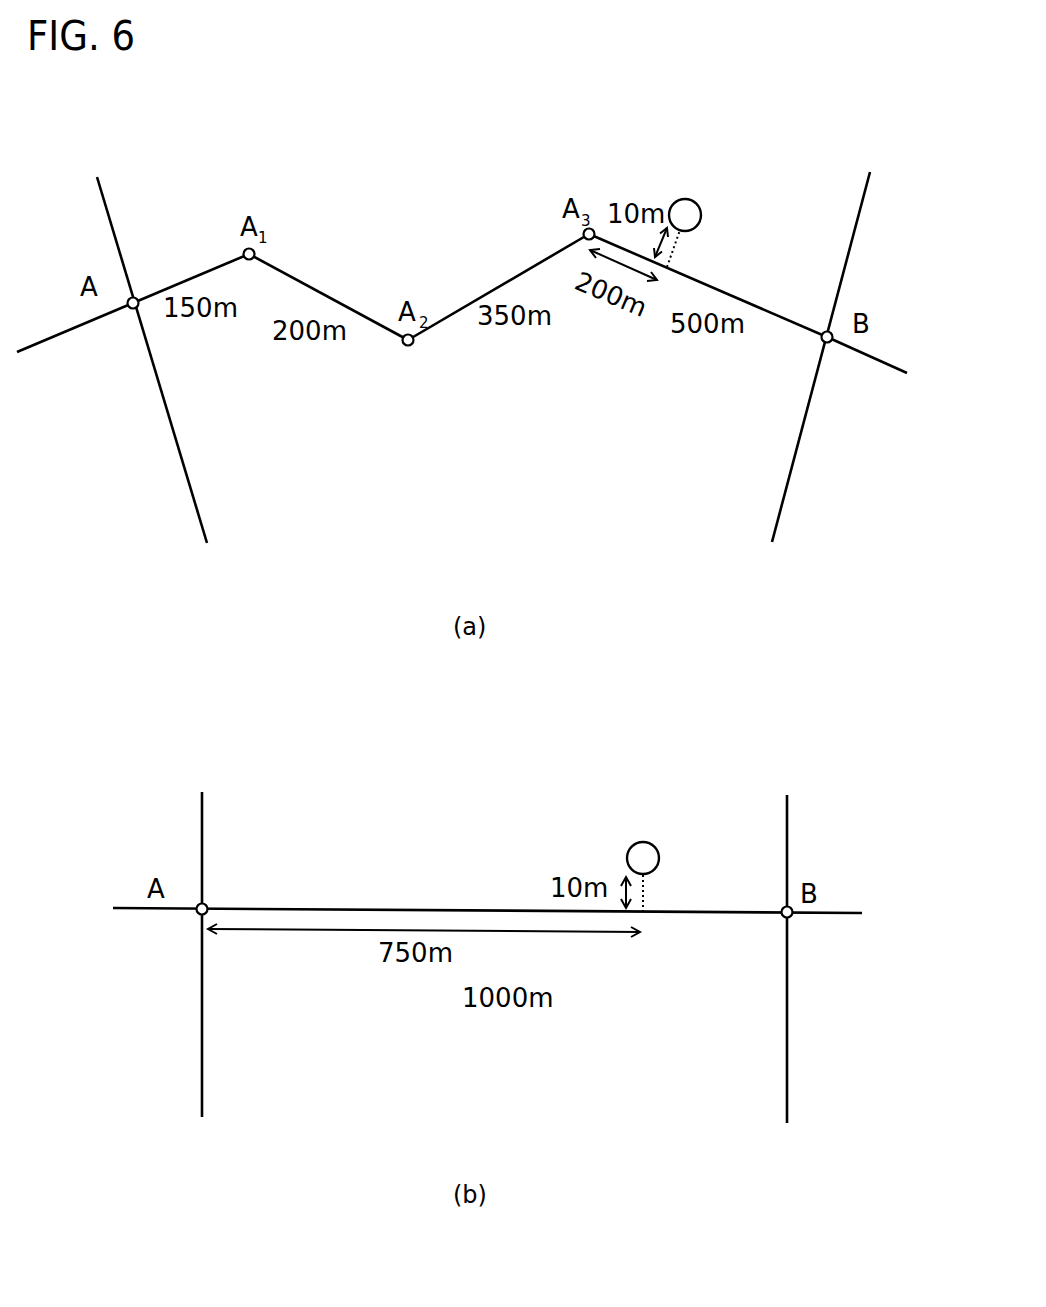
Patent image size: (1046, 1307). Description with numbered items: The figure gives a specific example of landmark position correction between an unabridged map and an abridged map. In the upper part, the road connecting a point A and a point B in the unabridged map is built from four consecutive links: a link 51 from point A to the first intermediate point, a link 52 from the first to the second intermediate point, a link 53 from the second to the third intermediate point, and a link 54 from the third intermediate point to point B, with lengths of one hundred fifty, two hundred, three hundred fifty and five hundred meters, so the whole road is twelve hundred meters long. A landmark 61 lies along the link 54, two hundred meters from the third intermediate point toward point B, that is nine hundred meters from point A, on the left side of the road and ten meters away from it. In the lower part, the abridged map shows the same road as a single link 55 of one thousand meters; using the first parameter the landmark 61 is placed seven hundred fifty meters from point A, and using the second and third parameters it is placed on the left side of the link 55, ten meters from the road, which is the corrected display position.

The link 51 is at (195, 273).
The link 52 is at (343, 303).
The link 53 is at (502, 285).
The link 54 is at (748, 303).
The link 55 is at (317, 908).
The landmark 61 is at (695, 203).